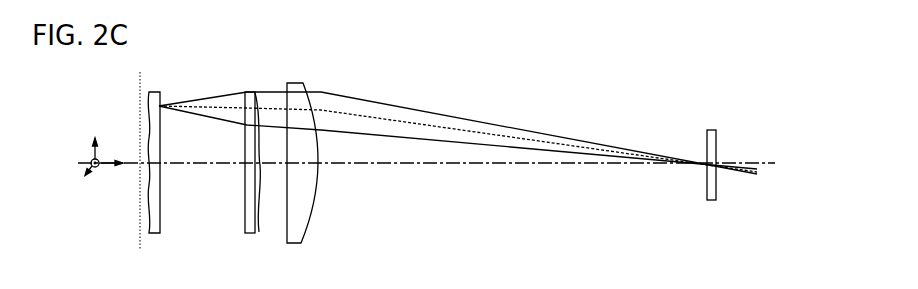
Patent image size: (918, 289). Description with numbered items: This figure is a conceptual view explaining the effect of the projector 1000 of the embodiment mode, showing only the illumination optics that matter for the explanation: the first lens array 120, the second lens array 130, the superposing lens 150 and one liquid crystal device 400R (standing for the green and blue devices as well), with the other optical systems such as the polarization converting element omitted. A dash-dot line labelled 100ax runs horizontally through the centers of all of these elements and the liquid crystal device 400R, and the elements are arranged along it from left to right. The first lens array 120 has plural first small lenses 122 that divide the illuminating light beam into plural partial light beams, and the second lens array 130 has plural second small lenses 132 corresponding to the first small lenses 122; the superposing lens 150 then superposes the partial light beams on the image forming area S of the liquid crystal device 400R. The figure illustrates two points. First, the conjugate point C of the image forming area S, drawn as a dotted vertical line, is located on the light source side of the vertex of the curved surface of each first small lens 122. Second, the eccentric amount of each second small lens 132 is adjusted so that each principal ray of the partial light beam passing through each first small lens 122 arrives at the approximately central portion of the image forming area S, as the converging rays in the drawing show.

The projector 1000 is at (625, 50).
The optical axis 100ax is at (452, 163).
The conjugate point C is at (138, 171).
The first lens array 120 is at (174, 155).
The first small lens 122 is at (160, 233).
The second lens array 130 is at (272, 155).
The second small lens 132 is at (257, 228).
The superposing lens 150 is at (297, 83).
The liquid crystal device 400R is at (708, 128).
The image forming area S is at (702, 174).